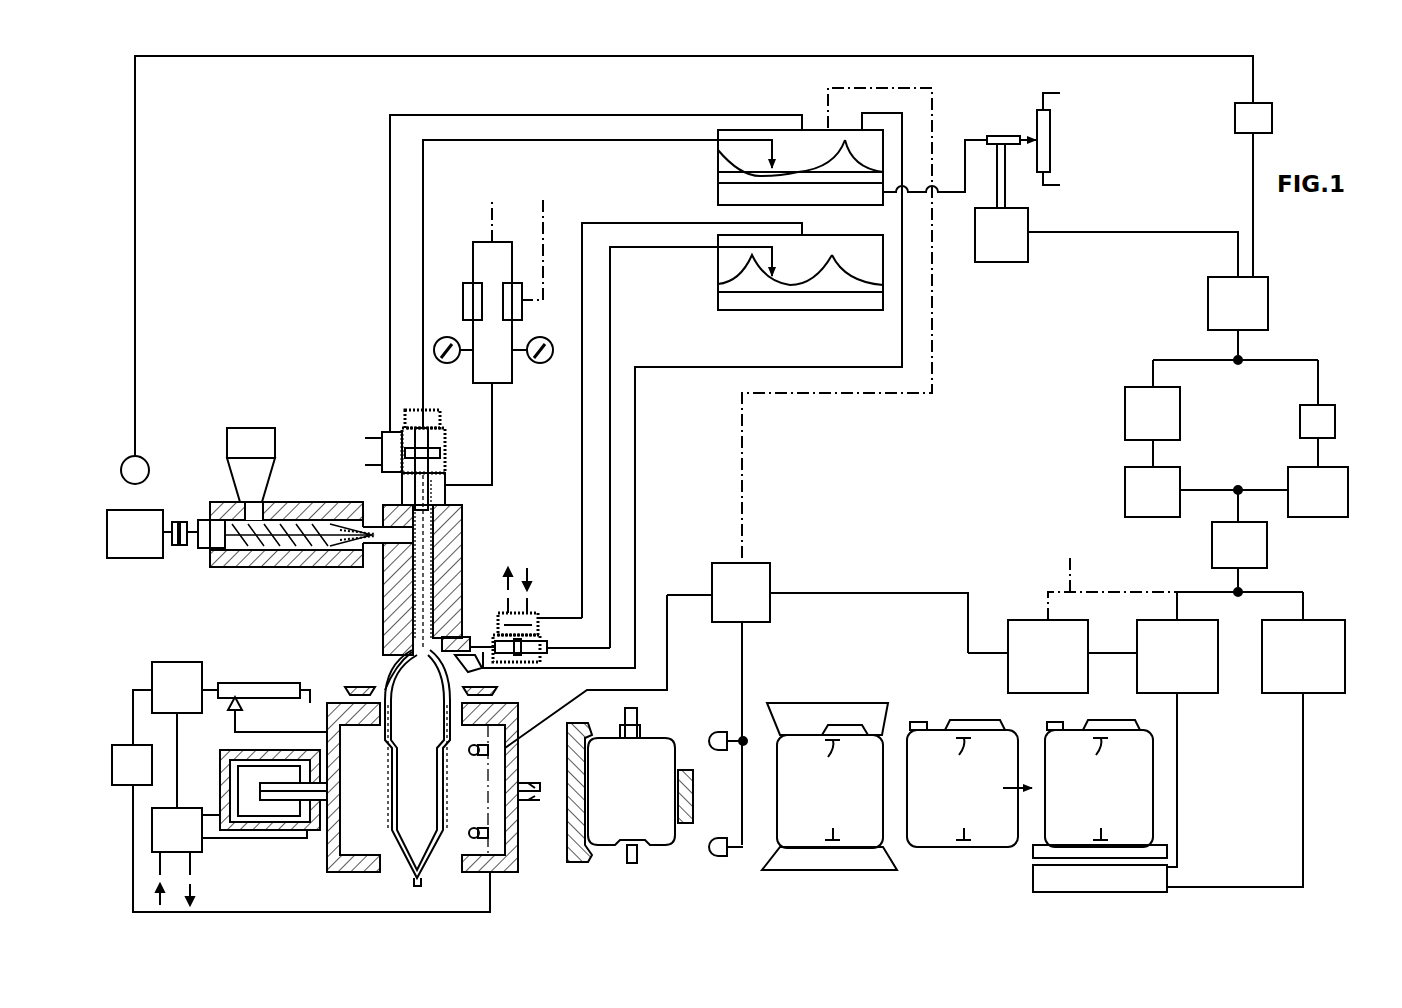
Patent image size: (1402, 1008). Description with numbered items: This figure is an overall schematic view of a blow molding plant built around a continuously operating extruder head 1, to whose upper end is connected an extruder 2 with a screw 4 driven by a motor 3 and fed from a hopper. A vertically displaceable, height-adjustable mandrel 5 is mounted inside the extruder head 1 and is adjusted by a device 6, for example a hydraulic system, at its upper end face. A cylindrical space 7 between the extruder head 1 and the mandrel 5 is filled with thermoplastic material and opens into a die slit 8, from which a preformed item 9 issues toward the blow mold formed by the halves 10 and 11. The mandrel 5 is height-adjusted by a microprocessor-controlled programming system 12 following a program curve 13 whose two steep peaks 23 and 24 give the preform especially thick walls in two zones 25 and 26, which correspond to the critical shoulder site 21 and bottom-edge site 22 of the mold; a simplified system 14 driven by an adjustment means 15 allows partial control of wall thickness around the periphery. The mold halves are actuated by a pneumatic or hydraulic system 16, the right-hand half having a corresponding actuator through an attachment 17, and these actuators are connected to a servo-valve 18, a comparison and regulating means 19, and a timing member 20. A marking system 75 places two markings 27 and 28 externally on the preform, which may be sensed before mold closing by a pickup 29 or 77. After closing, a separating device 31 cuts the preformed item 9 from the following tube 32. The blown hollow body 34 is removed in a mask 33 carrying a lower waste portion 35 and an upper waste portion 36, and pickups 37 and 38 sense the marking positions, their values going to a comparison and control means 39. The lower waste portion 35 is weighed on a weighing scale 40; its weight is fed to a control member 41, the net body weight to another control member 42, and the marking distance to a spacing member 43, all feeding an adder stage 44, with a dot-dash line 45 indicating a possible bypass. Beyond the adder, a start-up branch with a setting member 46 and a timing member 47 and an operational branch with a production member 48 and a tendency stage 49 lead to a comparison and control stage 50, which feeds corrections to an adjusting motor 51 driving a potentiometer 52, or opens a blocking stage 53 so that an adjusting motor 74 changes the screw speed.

The extruder head 1 is at (468, 518).
The extruder 2 is at (262, 588).
The motor 3 is at (140, 552).
The screw 4 is at (310, 512).
The mandrel 5 is at (412, 650).
The device 6 is at (445, 455).
The cylindrical space 7 is at (408, 572).
The die slit 8 is at (410, 642).
The preformed item 9 is at (388, 712).
The blow mold half 10 is at (362, 872).
The blow mold half 11 is at (500, 872).
The programming system 12 is at (714, 154).
The program curve 13 is at (800, 150).
The system 14 is at (462, 640).
The adjustment means 15 is at (540, 642).
The pneumatic or hydraulic system 16 is at (282, 830).
The attachment 17 is at (532, 800).
The servo-valve 18 is at (188, 815).
The comparison and regulating means 19 is at (158, 672).
The timing member 20 is at (120, 750).
The site 21 is at (340, 730).
The site 22 is at (342, 855).
The peak 23 is at (755, 150).
The peak 24 is at (855, 150).
The zone 25 is at (497, 700).
The zone 26 is at (488, 765).
The marking 27 is at (1096, 758).
The marking 28 is at (668, 848).
The pickup 29 is at (490, 750).
The separating device 31 is at (350, 687).
The tube 32 is at (385, 690).
The mask 33 is at (578, 862).
The hollow body 34 is at (608, 842).
The lower waste portion 35 is at (632, 863).
The upper waste portion 36 is at (637, 722).
The pickup 37 is at (720, 732).
The pickup 38 is at (720, 838).
The comparison and control means 39 is at (755, 585).
The weighing scale 40 is at (1040, 878).
The control member 41 is at (1200, 690).
The control member 42 is at (1320, 690).
The spacing member 43 is at (1022, 620).
The adder stage 44 is at (1212, 550).
The dot-dash line 45 is at (1070, 560).
The setting member 46 is at (1292, 478).
The timing member 47 is at (1303, 418).
The production member 48 is at (1128, 490).
The tendency stage 49 is at (1128, 410).
The comparison and control stage 50 is at (1212, 300).
The adjusting motor 51 is at (1005, 248).
The potentiometer 52 is at (1050, 145).
The blocking stage 53 is at (1238, 118).
The adjusting motor 74 is at (142, 458).
The marking system 75 is at (484, 660).
The pickup 77 is at (485, 855).